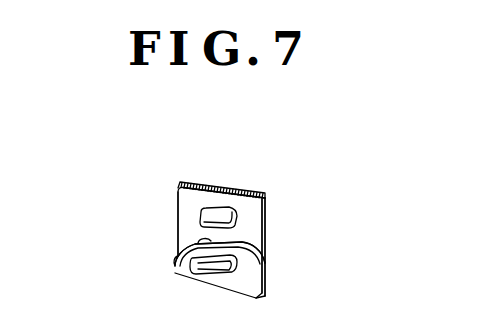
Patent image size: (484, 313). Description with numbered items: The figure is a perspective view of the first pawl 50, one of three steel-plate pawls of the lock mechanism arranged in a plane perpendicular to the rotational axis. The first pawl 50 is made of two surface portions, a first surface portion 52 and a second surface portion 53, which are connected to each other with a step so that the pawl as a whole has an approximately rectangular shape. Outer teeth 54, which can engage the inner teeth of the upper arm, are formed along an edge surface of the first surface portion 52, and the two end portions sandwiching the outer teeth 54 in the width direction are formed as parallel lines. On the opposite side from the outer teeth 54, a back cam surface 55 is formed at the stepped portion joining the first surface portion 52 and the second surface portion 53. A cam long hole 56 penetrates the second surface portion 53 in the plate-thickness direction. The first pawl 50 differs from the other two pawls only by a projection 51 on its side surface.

The first pawl 50 is at (198, 166).
The projection 51 is at (195, 222).
The first surface portion 52 is at (190, 198).
The second surface portion 53 is at (255, 290).
The outer teeth 54 is at (238, 188).
The back cam surface 55 is at (253, 243).
The cam long hole 56 is at (190, 271).